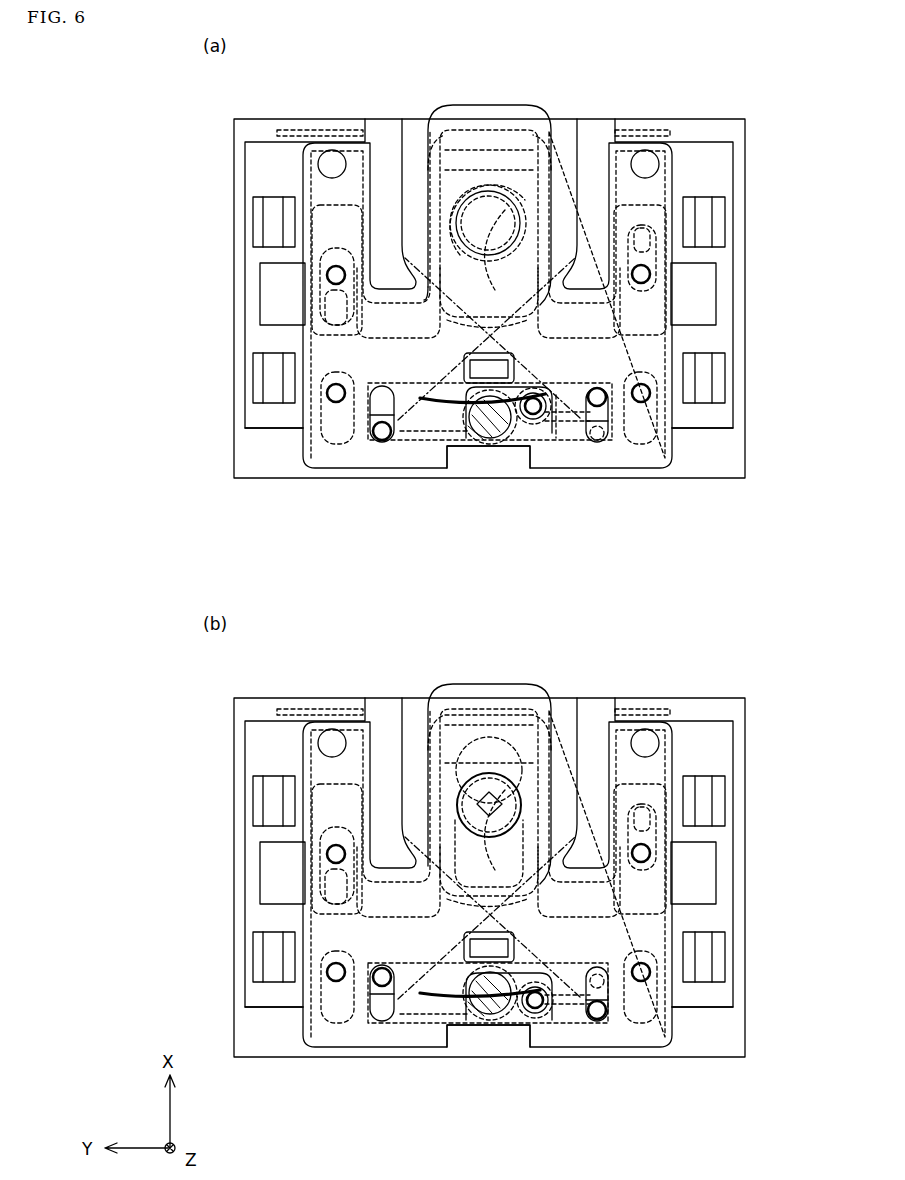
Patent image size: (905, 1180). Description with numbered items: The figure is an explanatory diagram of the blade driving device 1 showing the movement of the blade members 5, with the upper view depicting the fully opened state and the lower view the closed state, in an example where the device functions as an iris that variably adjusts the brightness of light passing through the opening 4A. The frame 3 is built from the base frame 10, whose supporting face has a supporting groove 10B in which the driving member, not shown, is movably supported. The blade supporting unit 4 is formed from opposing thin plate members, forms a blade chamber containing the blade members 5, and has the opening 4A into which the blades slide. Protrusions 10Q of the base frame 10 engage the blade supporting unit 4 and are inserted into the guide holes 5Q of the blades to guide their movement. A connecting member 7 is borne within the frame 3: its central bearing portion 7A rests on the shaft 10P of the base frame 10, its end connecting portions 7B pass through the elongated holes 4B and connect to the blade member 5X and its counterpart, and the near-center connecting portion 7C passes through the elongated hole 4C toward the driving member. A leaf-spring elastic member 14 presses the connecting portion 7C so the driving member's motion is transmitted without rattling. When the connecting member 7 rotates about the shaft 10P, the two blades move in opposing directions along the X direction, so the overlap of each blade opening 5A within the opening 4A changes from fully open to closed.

The blade driving device 1 is at (788, 88).
The frame 3 is at (722, 119).
The base frame 10 is at (489, 717).
The blade supporting unit 4 is at (545, 125).
The opening 4A is at (462, 150).
The elongated hole 4B is at (374, 446).
The elongated hole 4C is at (515, 386).
The blade member 5 is at (487, 188).
The blade member 5X is at (499, 228).
The opening 5A is at (518, 212).
The guide hole 5Q is at (316, 302).
The connecting member 7 is at (560, 442).
The bearing portion 7A is at (490, 441).
The connecting portion 7B is at (382, 441).
The connecting portion 7C is at (500, 440).
The supporting groove 10B is at (270, 222).
The shaft 10P is at (488, 472).
The protrusion 10Q is at (328, 272).
The elastic member 14 is at (430, 402).